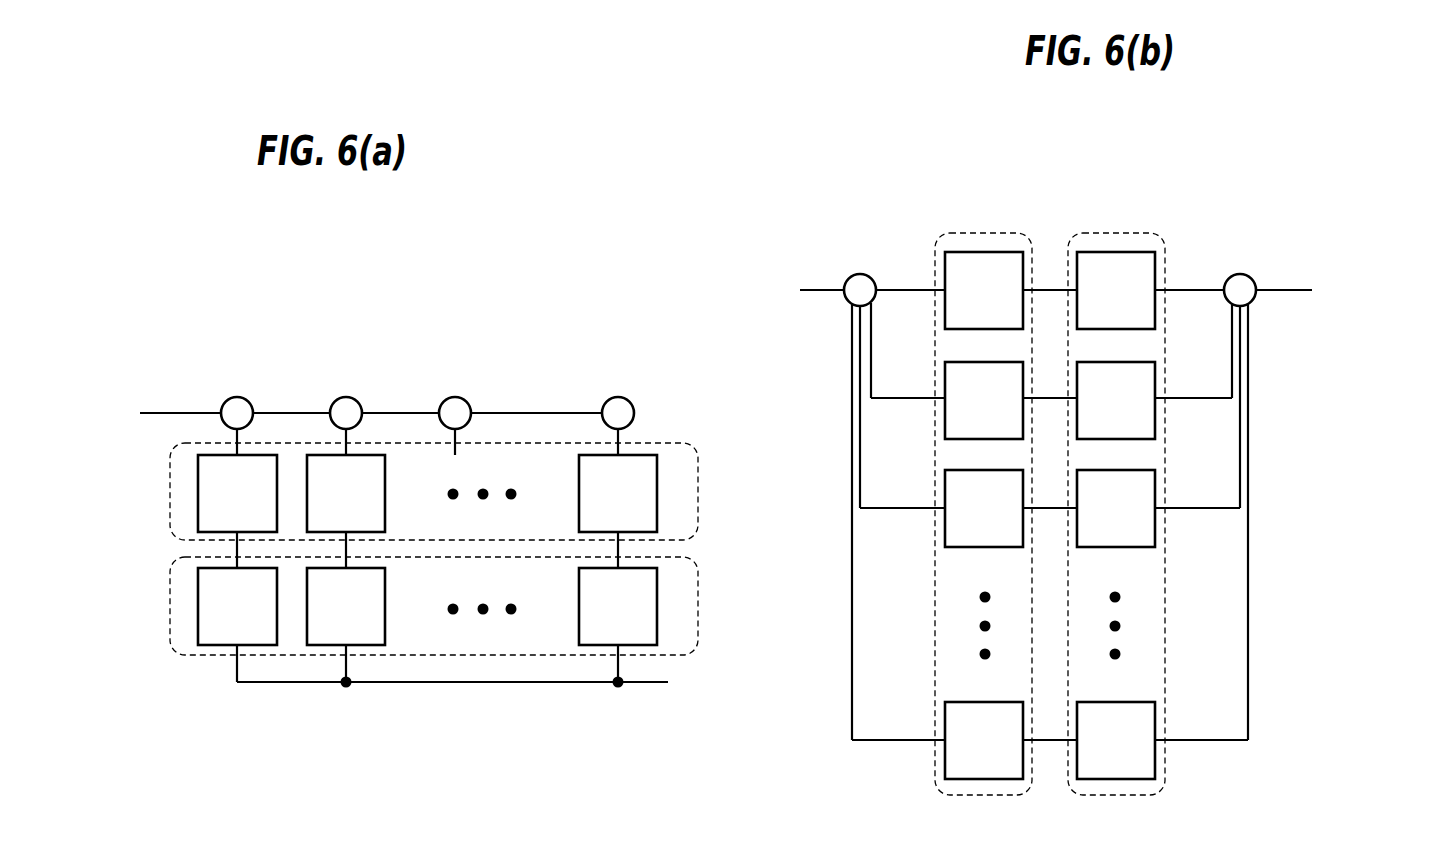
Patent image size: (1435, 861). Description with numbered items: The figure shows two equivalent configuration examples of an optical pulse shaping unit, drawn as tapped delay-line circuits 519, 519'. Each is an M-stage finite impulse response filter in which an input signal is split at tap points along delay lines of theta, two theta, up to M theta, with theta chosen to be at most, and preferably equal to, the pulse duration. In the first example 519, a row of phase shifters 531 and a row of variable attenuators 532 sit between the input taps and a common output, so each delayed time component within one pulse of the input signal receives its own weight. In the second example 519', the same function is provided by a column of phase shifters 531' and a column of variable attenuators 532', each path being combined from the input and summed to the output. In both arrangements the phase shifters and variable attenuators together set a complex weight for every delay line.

The phase shifter circuit 519 is at (421, 463).
The phase shifter 531 is at (389, 491).
The variable attenuator 532 is at (389, 606).
The phase shifter circuit (modified) 519' is at (1070, 420).
The phase shifter 531' is at (984, 471).
The variable attenuator 532' is at (1116, 471).